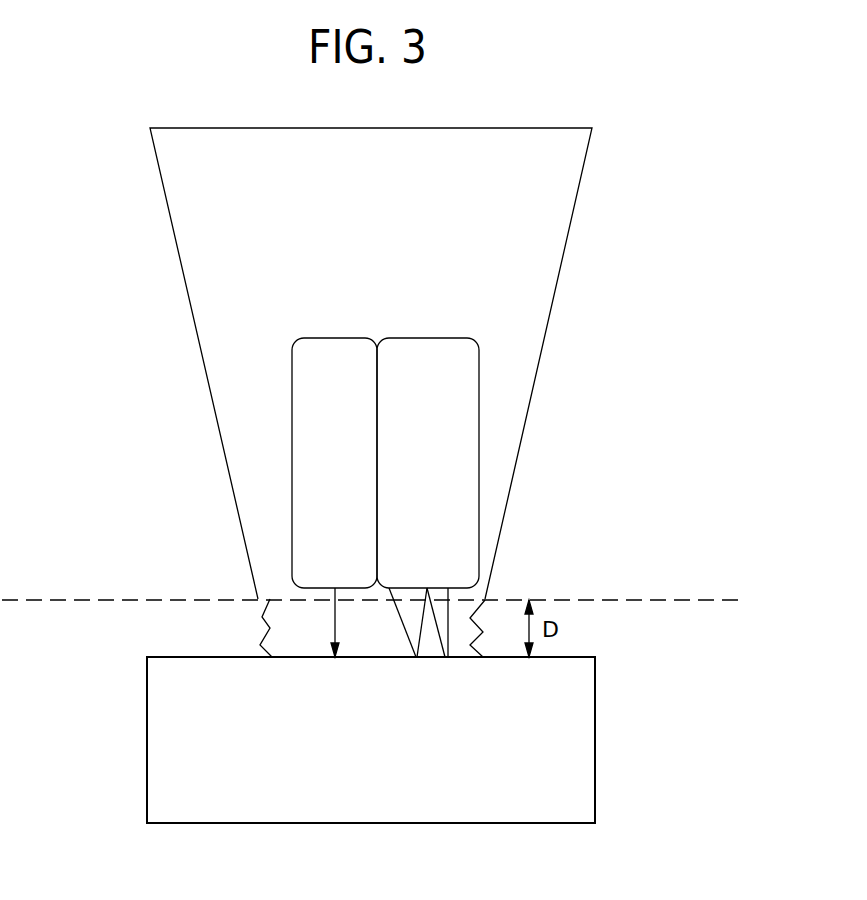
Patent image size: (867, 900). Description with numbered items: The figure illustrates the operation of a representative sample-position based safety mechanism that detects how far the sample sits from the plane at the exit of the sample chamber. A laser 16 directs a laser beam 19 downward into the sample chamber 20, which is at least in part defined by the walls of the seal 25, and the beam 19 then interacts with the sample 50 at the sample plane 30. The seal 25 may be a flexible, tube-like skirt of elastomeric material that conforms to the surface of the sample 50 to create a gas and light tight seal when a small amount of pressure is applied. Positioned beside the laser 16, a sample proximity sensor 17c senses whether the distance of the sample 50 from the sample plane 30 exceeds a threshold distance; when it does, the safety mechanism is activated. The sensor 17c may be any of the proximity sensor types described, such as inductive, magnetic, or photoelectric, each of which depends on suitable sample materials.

The laser 16 is at (336, 338).
The sample proximity sensor 17c is at (428, 338).
The laser beam 19 is at (330, 623).
The sample chamber 20 is at (300, 641).
The seal 25 is at (262, 618).
The sample plane 30 is at (637, 599).
The sample 50 is at (597, 740).